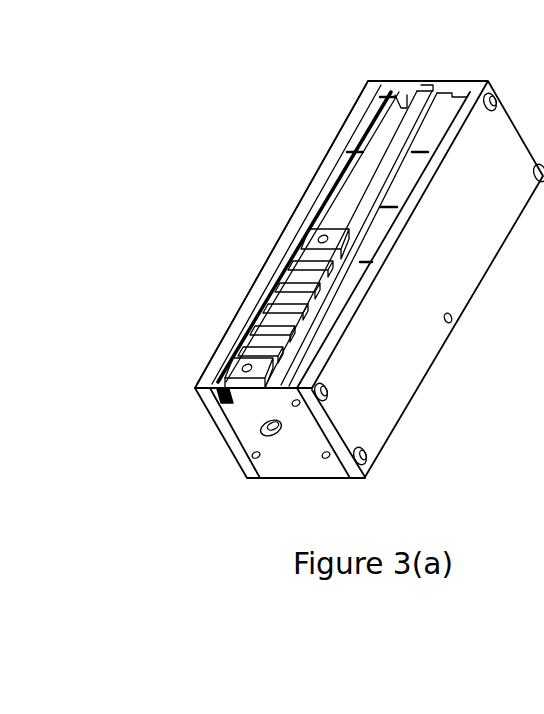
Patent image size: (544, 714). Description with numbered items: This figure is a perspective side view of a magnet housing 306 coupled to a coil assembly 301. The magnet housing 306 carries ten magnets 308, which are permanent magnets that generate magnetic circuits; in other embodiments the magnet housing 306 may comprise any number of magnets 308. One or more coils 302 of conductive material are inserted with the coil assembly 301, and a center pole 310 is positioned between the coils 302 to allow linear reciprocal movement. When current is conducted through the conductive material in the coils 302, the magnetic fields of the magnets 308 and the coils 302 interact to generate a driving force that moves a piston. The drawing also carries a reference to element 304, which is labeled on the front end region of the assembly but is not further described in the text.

The coil assembly 301 is at (233, 343).
The coils 302 is at (293, 272).
The front end of channel 304 is at (233, 377).
The magnet housing 306 is at (377, 411).
The magnets 308 is at (326, 186).
The center pole 310 is at (396, 128).